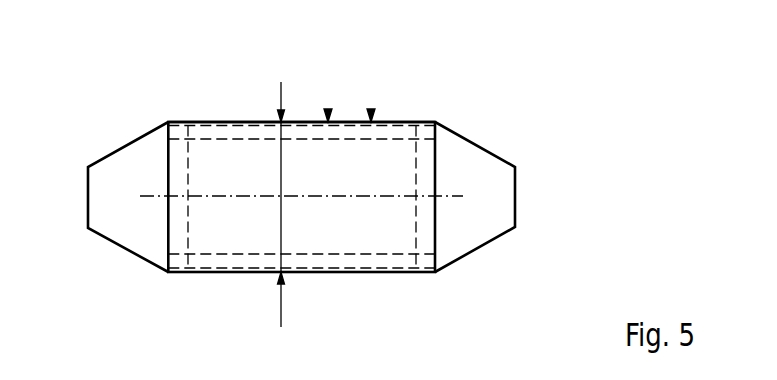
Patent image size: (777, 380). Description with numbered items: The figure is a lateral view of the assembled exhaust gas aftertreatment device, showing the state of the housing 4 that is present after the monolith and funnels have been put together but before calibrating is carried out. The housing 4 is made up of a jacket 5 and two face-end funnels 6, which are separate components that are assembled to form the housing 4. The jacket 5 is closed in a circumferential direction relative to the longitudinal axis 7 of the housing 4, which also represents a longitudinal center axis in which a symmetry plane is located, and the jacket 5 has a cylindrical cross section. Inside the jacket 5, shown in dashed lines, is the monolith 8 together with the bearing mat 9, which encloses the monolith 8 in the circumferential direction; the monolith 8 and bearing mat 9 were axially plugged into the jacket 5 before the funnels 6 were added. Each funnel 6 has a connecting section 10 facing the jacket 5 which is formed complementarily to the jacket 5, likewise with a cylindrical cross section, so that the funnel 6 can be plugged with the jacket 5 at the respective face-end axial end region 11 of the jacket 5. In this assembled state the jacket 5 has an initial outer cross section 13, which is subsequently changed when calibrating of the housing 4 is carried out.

The housing 4 is at (371, 110).
The jacket 5 is at (328, 110).
The face-end funnel 6 is at (124, 147).
The longitudinal axis 7 is at (329, 197).
The monolith 8 is at (250, 153).
The bearing mat 9 is at (212, 130).
The connecting section 10 is at (175, 237).
The axial end region 11 is at (169, 121).
The initial outer cross section 13 is at (281, 308).